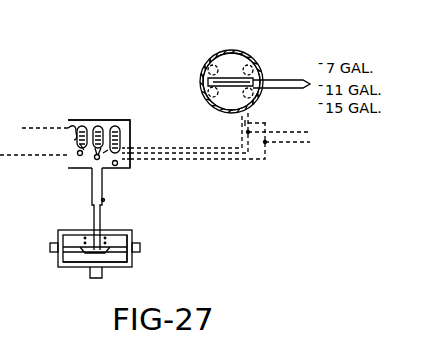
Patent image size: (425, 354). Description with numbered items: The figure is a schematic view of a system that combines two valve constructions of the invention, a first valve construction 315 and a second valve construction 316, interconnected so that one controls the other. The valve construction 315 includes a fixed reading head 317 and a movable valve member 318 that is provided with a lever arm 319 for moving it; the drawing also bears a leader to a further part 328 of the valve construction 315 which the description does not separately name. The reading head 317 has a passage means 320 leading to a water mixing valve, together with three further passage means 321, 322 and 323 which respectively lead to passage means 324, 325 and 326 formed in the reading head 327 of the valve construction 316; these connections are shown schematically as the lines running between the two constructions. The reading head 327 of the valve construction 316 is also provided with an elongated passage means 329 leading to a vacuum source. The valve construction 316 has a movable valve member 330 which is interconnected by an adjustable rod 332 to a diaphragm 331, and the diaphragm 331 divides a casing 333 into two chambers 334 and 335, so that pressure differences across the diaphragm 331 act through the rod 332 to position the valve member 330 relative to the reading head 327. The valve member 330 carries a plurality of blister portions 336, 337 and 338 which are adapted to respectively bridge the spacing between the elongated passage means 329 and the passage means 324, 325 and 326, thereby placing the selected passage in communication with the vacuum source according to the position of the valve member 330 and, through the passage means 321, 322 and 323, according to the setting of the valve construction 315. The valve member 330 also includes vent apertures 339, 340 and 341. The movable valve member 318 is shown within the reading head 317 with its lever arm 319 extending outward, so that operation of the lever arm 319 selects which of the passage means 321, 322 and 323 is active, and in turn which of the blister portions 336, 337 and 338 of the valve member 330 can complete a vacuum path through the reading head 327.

The valve construction 315 is at (232, 32).
The valve construction 316 is at (114, 78).
The fixed reading head 317 is at (238, 51).
The movable valve member 318 is at (236, 63).
The lever arm 319 is at (288, 81).
The passage means 320 is at (208, 55).
The passage means 321 is at (257, 68).
The passage means 322 is at (259, 91).
The passage means 323 is at (259, 102).
The passage means 324 is at (80, 144).
The passage means 325 is at (97, 142).
The passage means 326 is at (104, 153).
The reading head 327 is at (127, 140).
The float arm 328 is at (231, 87).
The elongated passage means 329 is at (88, 127).
The movable valve member 330 is at (124, 125).
The diaphragm 331 is at (131, 266).
The adjustable rod 332 is at (101, 211).
The casing 333 is at (131, 232).
The chamber 334 is at (101, 273).
The chamber 335 is at (70, 237).
The blister portion 336 is at (73, 128).
The blister portion 337 is at (100, 138).
The blister portion 338 is at (122, 128).
The vent aperture 339 is at (78, 154).
The vent aperture 340 is at (100, 162).
The vent aperture 341 is at (117, 165).